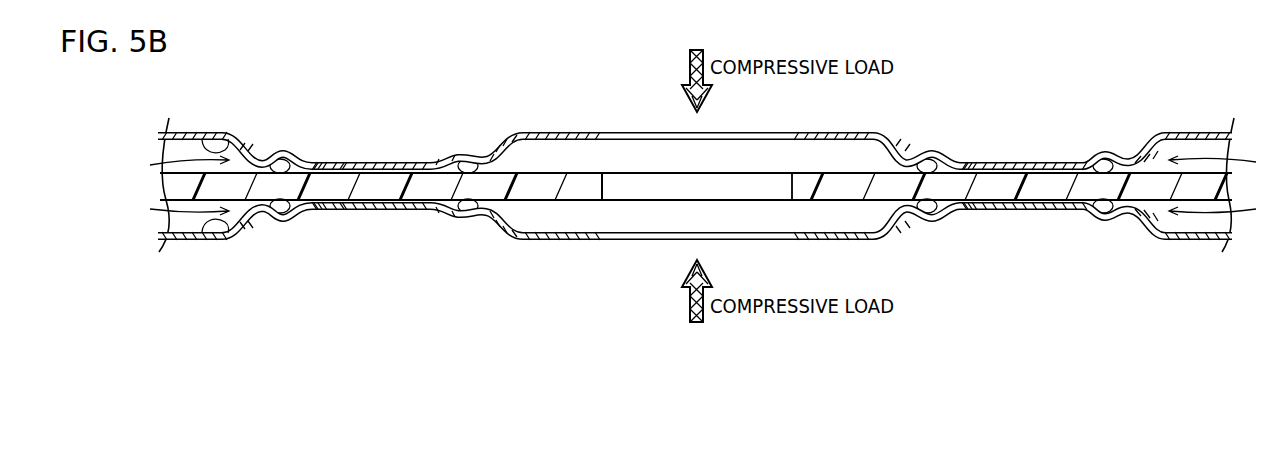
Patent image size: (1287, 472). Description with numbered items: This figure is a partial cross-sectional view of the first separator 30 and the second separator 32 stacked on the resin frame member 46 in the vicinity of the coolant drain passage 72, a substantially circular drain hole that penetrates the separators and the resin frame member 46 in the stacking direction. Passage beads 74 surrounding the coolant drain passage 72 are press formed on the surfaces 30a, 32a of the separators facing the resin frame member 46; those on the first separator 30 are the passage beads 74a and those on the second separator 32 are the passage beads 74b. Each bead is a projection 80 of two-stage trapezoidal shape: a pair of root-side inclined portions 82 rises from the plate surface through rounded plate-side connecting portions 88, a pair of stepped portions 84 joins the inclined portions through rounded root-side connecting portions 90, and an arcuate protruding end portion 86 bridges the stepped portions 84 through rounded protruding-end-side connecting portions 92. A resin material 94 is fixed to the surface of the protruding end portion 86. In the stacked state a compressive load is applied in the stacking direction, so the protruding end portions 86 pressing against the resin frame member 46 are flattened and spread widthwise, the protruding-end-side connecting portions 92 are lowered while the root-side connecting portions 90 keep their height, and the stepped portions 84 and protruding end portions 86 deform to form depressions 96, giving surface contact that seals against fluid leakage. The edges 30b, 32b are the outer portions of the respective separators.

The first separator 30 is at (695, 256).
The surface of the first separator 30a is at (229, 232).
The edge of lower film 30b is at (192, 241).
The second separator 32 is at (695, 118).
The surface of the second separator 32a is at (229, 140).
The edge of upper film 32b is at (192, 131).
The resin frame member 46 is at (647, 186).
The coolant drain passage 72 is at (697, 188).
The passage beads 74 is at (699, 188).
The passage beads of the first separator 74a is at (699, 258).
The passage beads of the second separator 74b is at (699, 116).
The projection 80 is at (699, 188).
The root-side inclined portions 82 is at (492, 186).
The stepped portions 84 is at (442, 186).
The protruding end portion 86 is at (339, 186).
The plate-side connecting portions 88 is at (526, 186).
The root-side connecting portions 90 is at (472, 186).
The protruding-end-side connecting portions 92 is at (417, 186).
The resin material 94 is at (640, 187).
The depressions 96 is at (690, 188).